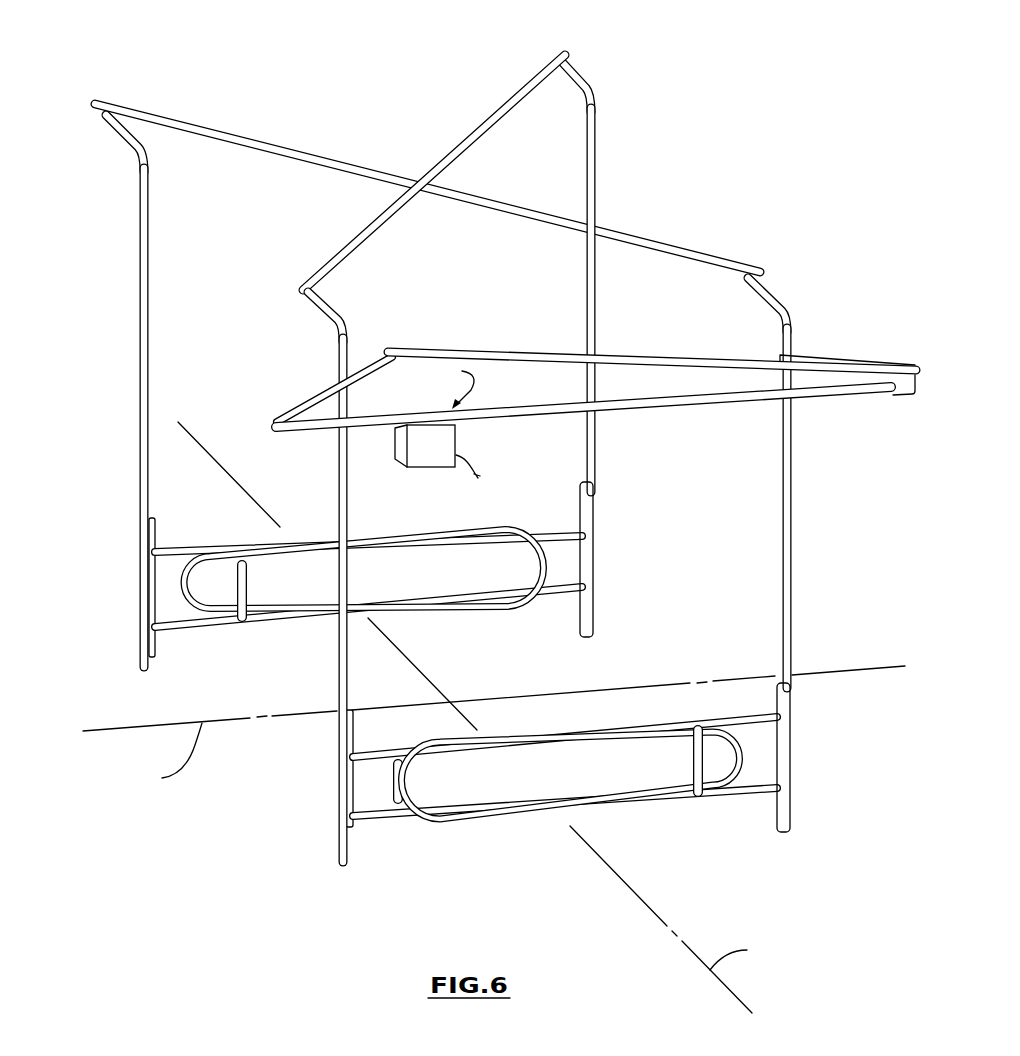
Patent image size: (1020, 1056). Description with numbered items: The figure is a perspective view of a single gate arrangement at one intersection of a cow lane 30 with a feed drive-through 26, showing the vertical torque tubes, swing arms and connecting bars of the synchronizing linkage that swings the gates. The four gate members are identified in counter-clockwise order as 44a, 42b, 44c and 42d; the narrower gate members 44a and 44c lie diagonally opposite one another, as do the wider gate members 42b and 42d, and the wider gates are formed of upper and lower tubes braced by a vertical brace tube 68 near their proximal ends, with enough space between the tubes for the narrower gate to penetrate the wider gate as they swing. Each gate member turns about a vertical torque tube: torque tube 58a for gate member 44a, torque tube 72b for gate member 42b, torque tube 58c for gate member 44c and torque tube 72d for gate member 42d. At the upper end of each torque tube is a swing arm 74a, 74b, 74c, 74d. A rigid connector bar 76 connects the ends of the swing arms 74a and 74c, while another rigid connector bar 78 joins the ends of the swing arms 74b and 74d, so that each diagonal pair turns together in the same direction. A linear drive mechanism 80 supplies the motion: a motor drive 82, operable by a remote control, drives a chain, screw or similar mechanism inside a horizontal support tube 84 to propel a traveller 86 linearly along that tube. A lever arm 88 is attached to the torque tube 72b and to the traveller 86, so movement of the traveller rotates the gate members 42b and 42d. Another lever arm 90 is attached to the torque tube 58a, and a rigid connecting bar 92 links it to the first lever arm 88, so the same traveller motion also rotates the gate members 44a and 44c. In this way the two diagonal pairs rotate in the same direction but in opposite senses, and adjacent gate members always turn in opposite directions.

The feed drive-through 26 is at (215, 814).
The cow lane 30 is at (815, 987).
The gate member 42b is at (617, 726).
The gate member 42d is at (183, 548).
The gate member 44a is at (523, 750).
The gate member 44c is at (490, 527).
The torque tube 58a is at (348, 512).
The torque tube 58c is at (597, 313).
The vertical brace tube 68 is at (247, 588).
The torque tube 72b is at (798, 523).
The torque tube 72d is at (150, 280).
The swing arm 74a is at (328, 303).
The swing arm 74b is at (780, 295).
The swing arm 74c is at (580, 80).
The swing arm 74d is at (124, 140).
The connector bar 76 is at (462, 139).
The connector bar 78 is at (680, 240).
The linear drive mechanism 80 is at (452, 387).
The motor drive 82 is at (458, 442).
The horizontal support tube 84 is at (684, 408).
The traveller 86 is at (896, 393).
The lever arm 88 is at (806, 355).
The lever arm 90 is at (365, 370).
The connecting bar 92 is at (510, 350).